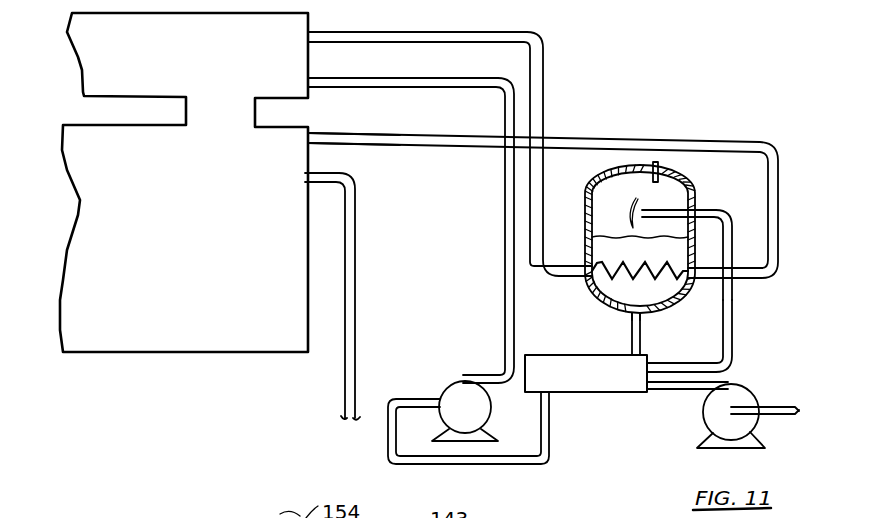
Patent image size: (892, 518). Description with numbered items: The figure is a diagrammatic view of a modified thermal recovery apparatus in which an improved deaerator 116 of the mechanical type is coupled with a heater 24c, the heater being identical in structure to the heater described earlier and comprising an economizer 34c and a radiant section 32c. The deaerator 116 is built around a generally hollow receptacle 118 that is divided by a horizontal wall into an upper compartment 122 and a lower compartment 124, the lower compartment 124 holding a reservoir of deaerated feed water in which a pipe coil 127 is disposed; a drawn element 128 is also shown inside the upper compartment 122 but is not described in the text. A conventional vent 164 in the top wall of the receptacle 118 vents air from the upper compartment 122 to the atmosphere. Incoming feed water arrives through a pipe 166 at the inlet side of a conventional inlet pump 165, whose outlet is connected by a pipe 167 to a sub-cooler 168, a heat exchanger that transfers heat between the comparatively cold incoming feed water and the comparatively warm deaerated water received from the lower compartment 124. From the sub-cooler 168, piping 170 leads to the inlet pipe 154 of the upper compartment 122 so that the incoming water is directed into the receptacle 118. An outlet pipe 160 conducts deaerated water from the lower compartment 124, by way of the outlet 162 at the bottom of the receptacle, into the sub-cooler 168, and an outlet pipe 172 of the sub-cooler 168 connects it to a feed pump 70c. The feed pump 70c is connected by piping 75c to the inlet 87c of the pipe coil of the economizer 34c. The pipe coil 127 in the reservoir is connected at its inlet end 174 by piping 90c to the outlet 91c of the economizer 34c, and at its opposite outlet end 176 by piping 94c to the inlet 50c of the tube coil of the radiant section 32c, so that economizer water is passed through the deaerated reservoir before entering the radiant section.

The heater 24c is at (181, 355).
The economizer 34c is at (208, 50).
The radiant section 32c is at (227, 229).
The piping 90c is at (422, 34).
The outlet of the economizer 91c is at (313, 44).
The piping 75c is at (415, 78).
The inlet of the pipe coil of the economizer 87c is at (312, 88).
The piping 94c is at (482, 147).
The inlet of the tube coil of the radiant section 50c is at (313, 143).
The deaerator 116 is at (705, 199).
The hollow receptacle 118 is at (584, 222).
The upper compartment 122 is at (628, 199).
The baffle 128 is at (629, 211).
The vent 164 is at (651, 163).
The inlet pipe 154 is at (668, 204).
The piping 170 is at (735, 312).
The lower compartment 124 is at (636, 281).
The inlet end of the pipe coil 174 is at (586, 276).
The outlet end of the pipe coil 176 is at (693, 282).
The pipe coil 127 is at (620, 283).
The vessel outlet 162 is at (617, 308).
The outlet pipe 160 is at (641, 326).
The sub-cooler 168 is at (588, 385).
The outlet pipe 172 is at (548, 432).
The feed pump 70c is at (456, 392).
The pipe 167 is at (695, 387).
The inlet pump 165 is at (742, 402).
The pipe 166 is at (767, 415).